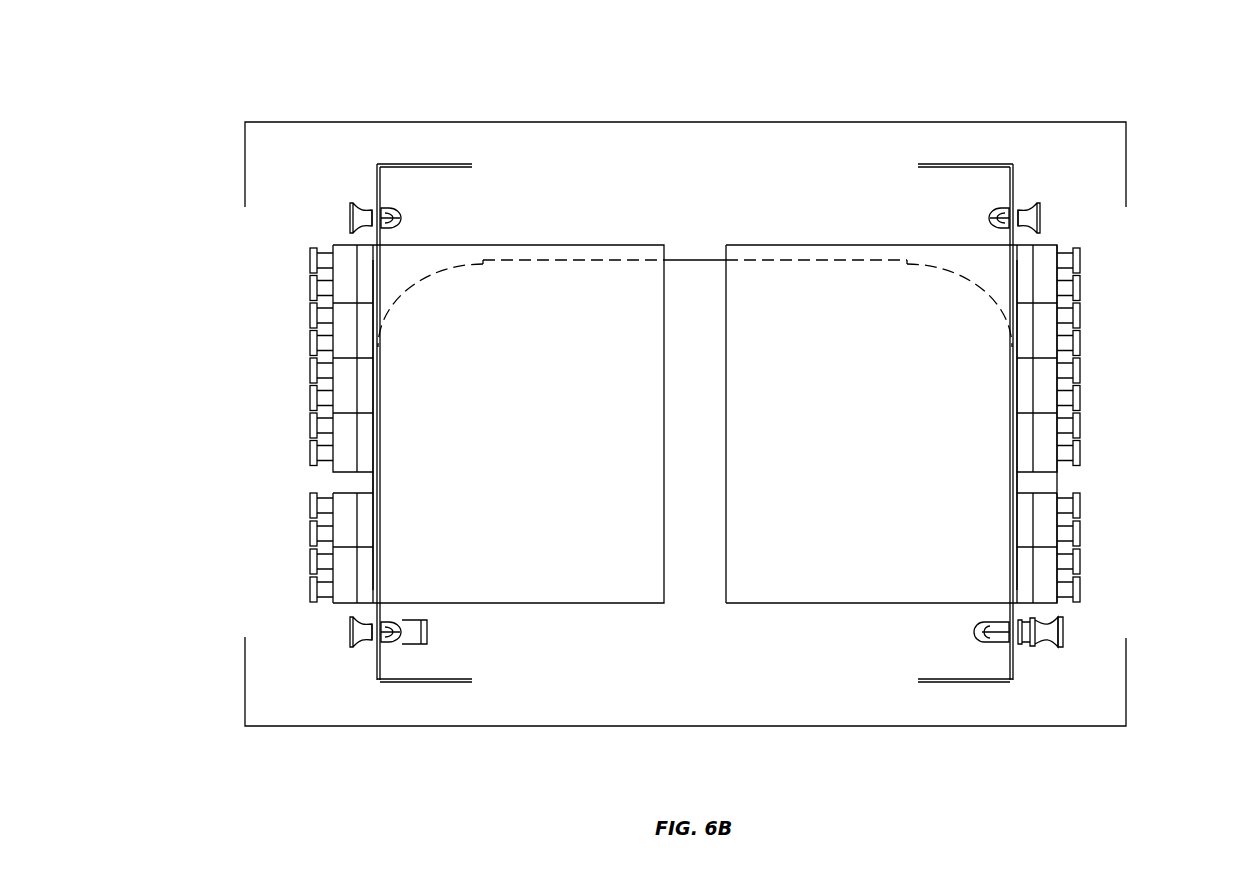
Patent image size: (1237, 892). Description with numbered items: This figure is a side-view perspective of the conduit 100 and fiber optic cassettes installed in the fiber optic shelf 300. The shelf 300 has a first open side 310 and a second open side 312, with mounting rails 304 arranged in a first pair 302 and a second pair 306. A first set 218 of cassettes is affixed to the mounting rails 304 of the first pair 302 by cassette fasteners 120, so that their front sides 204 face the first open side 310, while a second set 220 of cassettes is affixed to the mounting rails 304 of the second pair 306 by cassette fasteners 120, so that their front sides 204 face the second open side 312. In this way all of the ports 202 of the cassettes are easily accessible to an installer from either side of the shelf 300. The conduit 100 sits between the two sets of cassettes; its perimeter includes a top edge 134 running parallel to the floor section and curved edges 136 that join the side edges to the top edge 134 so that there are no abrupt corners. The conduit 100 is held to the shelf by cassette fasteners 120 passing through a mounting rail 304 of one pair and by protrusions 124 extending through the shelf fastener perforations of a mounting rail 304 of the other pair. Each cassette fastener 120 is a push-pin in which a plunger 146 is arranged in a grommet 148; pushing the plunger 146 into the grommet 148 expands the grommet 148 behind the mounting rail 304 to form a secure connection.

The fiber optic shelf 300 is at (912, 88).
The conduit 100 is at (711, 355).
The first open side 310 is at (1108, 258).
The second open side 312 is at (224, 254).
The ports 202 is at (315, 282).
The front sides 204 is at (372, 323).
The first set 218 is at (1000, 284).
The second set 220 is at (395, 283).
The top edge 134 is at (551, 262).
The curved edges 136 is at (412, 292).
The first pair 302 is at (1013, 190).
The mounting rails 304 is at (378, 165).
The second pair 306 is at (376, 190).
The cassette fasteners 120 is at (352, 212).
The plunger 146 is at (352, 225).
The grommet 148 is at (398, 215).
The protrusions 124 is at (428, 632).